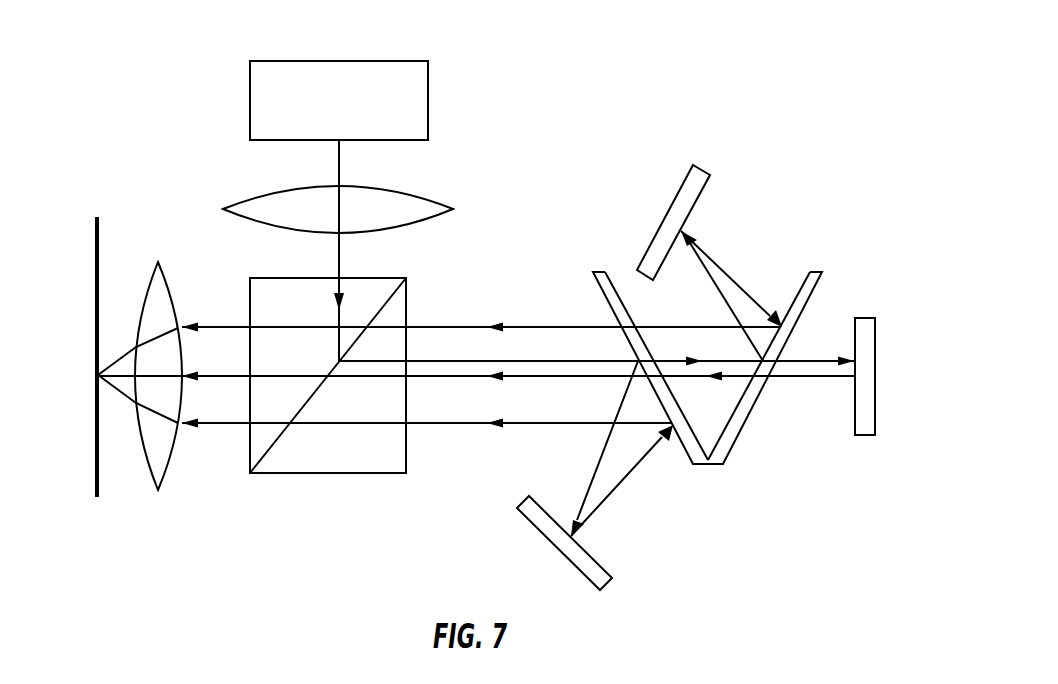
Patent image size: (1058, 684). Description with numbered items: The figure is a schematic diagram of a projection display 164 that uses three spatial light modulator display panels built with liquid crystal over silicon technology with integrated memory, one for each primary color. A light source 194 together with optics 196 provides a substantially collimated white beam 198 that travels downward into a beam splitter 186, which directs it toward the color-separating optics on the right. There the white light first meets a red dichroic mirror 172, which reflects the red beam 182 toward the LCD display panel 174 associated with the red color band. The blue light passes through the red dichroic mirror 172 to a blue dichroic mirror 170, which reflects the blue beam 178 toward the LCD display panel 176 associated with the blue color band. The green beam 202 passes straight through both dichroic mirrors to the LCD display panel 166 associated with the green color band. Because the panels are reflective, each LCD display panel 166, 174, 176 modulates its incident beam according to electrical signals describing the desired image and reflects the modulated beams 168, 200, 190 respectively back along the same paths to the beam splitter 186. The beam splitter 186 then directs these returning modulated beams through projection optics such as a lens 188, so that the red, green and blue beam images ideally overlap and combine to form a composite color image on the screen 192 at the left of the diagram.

The projection display 164 is at (793, 132).
The LCD display panel 166 is at (898, 376).
The modulated beam 168 is at (476, 391).
The blue dichroic mirror 170 is at (765, 384).
The red dichroic mirror 172 is at (650, 384).
The LCD display panel 174 is at (551, 543).
The LCD display panel 176 is at (653, 222).
The blue beam 178 is at (718, 296).
The red beam 182 is at (600, 448).
The beam splitter 186 is at (328, 393).
The lens 188 is at (162, 393).
The modulated beam 190 is at (427, 439).
The screen 192 is at (134, 345).
The light source 194 is at (350, 76).
The optics 196 is at (374, 196).
The white beam 198 is at (370, 251).
The modulated beam 200 is at (481, 312).
The green beam 202 is at (597, 346).